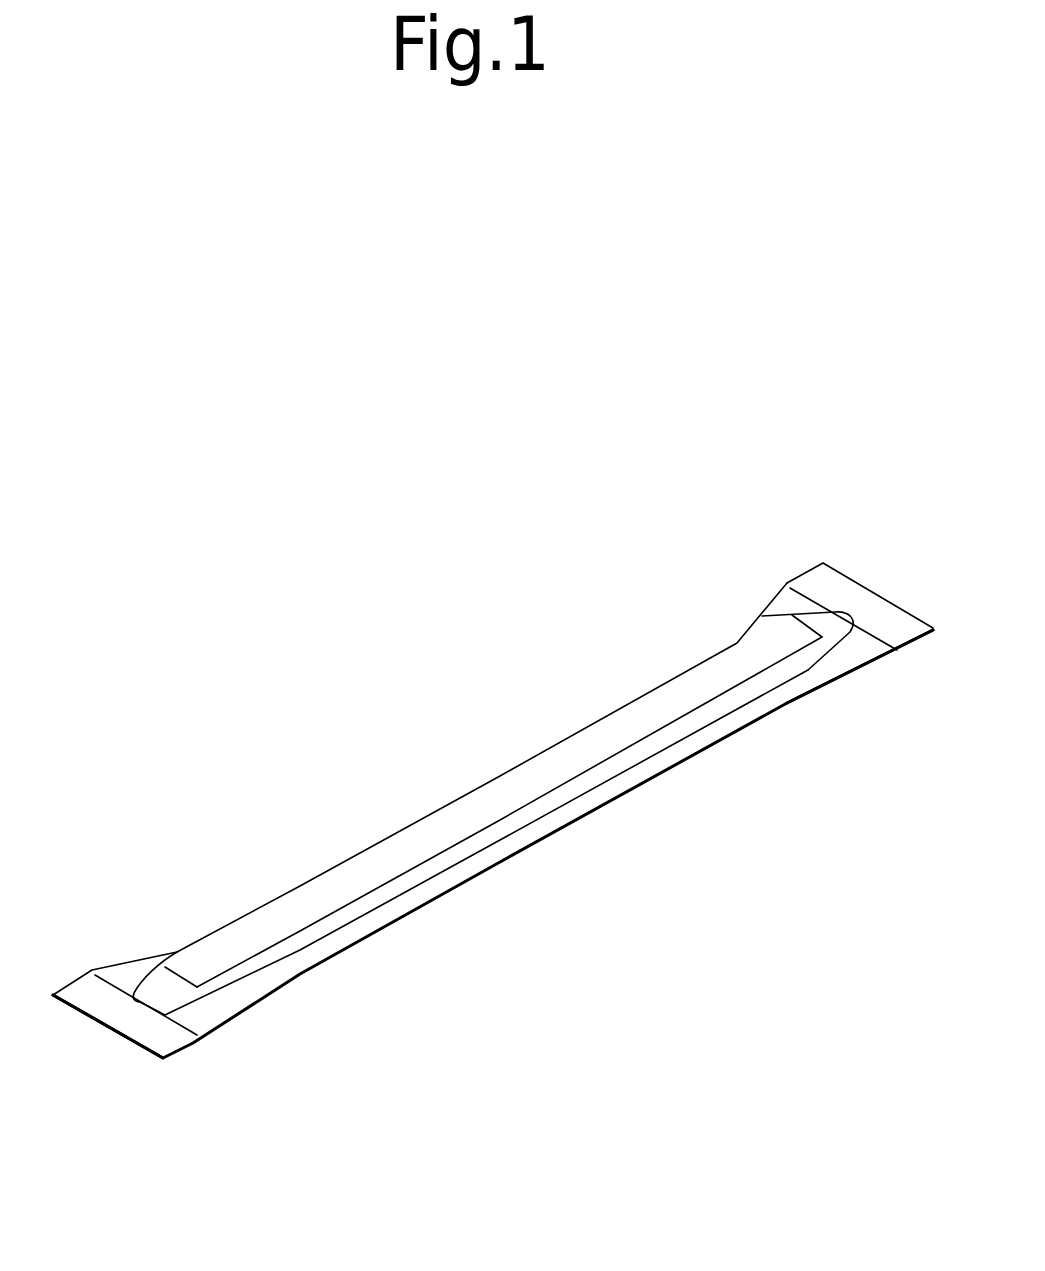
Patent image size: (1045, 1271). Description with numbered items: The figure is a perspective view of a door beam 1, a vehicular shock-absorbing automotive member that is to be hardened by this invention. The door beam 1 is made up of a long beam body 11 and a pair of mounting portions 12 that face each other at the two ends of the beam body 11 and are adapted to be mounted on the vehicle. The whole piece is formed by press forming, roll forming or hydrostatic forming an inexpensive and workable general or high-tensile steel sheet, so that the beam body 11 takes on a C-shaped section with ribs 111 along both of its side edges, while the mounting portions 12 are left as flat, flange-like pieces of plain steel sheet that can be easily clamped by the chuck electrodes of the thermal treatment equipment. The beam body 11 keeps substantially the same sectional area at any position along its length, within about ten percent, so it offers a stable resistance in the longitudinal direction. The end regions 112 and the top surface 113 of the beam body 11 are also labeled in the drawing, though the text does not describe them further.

The door beam 1 is at (455, 750).
The beam body 11 is at (513, 820).
The rib 111 is at (648, 768).
The end portion of body 112 is at (760, 625).
The top surface of body 113 is at (393, 848).
The mounting portion 12 is at (843, 588).